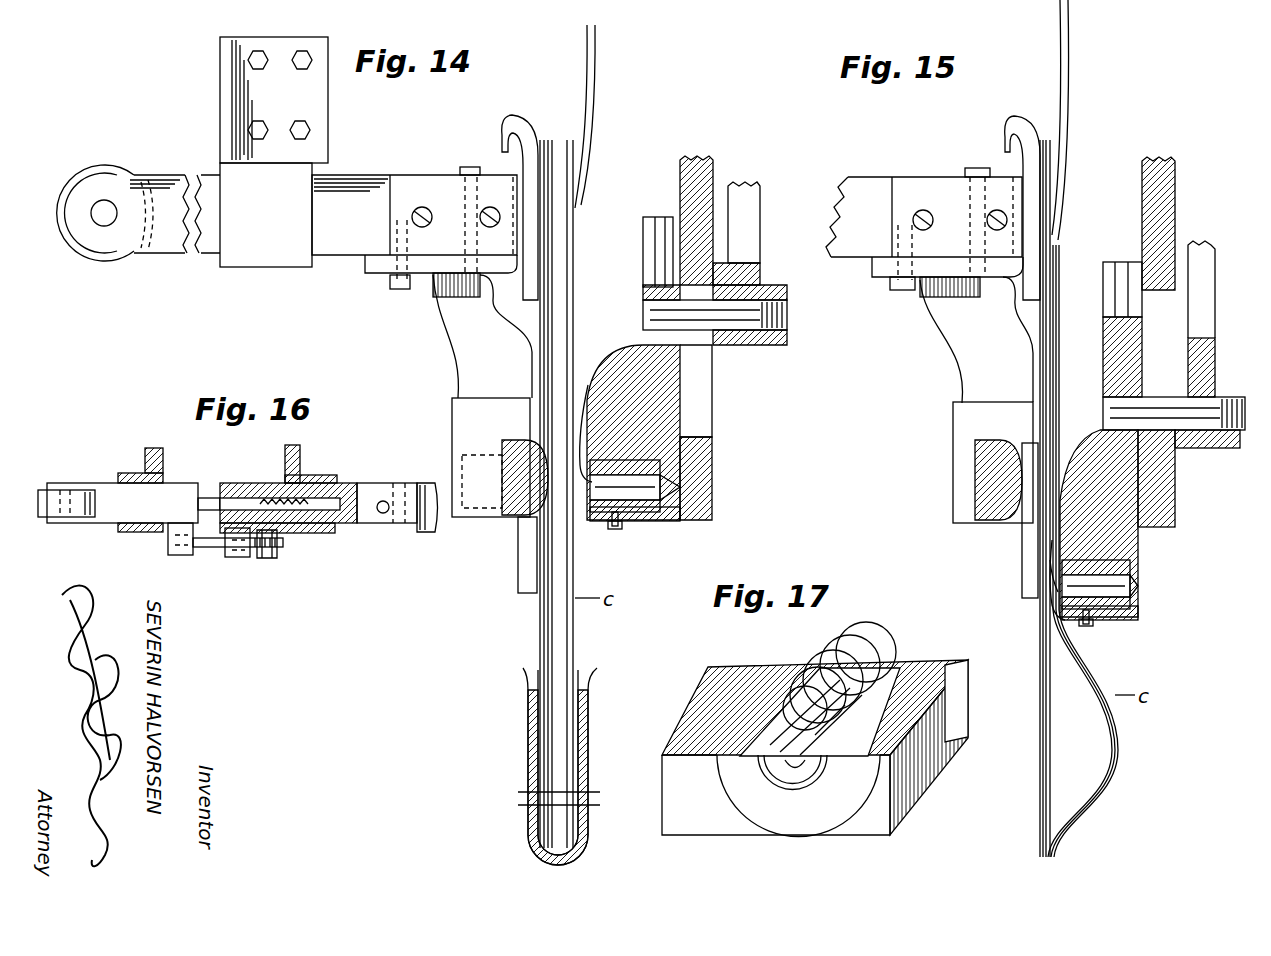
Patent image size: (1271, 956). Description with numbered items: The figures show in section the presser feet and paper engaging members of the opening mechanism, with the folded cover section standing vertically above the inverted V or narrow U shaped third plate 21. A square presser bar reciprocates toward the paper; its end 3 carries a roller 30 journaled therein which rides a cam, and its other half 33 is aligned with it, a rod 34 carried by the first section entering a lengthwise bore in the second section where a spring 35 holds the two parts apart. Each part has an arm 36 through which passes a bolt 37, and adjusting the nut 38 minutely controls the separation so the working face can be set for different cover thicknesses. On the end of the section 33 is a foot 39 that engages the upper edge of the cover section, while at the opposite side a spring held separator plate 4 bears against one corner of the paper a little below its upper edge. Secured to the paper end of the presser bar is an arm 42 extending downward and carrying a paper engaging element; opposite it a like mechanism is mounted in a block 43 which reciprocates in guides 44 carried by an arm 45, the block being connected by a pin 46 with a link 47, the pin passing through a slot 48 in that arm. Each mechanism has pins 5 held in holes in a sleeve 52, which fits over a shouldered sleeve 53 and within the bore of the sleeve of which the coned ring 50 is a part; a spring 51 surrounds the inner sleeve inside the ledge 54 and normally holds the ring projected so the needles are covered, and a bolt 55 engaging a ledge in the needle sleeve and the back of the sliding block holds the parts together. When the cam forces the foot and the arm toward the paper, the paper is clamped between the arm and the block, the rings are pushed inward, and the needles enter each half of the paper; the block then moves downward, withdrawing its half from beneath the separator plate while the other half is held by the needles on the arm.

In FIG. 14, the presser bar end 3 is at (165, 245).
In FIG. 16, the presser bar end 3 is at (115, 482).
In FIG. 14, the separator plate 4 is at (598, 162).
In FIG. 15, the separator plate 4 is at (1075, 180).
In FIG. 14, the pins 5 is at (587, 424).
In FIG. 15, the pins 5 is at (1055, 605).
In FIG. 17, the pins 5 is at (795, 790).
In FIG. 14, the third plate 21 is at (525, 740).
In FIG. 14, the roller 30 is at (97, 258).
In FIG. 16, the roller 30 is at (80, 490).
In FIG. 14, the presser bar half 33 is at (345, 245).
In FIG. 15, the presser bar half 33 is at (880, 182).
In FIG. 16, the presser bar half 33 is at (365, 490).
In FIG. 16, the rod 34 is at (212, 497).
In FIG. 16, the spring housing 35 is at (270, 497).
In FIG. 16, the arms 36 is at (172, 548).
In FIG. 16, the bolt 37 is at (205, 548).
In FIG. 16, the nut 38 is at (272, 558).
In FIG. 14, the foot 39 is at (522, 158).
In FIG. 15, the foot 39 is at (1035, 140).
In FIG. 16, the foot 39 is at (425, 482).
In FIG. 14, the arm 42 is at (455, 370).
In FIG. 15, the arm 42 is at (965, 380).
In FIG. 14, the block 43 is at (628, 395).
In FIG. 15, the block 43 is at (1128, 530).
In FIG. 14, the guides 44 is at (645, 262).
In FIG. 15, the guides 44 is at (1105, 290).
In FIG. 14, the arm 45 is at (680, 196).
In FIG. 15, the arm 45 is at (1142, 228).
In FIG. 14, the pin 46 is at (740, 345).
In FIG. 15, the pin 46 is at (1195, 450).
In FIG. 14, the link 47 is at (750, 233).
In FIG. 15, the link 47 is at (1210, 340).
In FIG. 14, the slot 48 is at (705, 403).
In FIG. 14, the ring 50 is at (520, 440).
In FIG. 15, the ring 50 is at (1010, 520).
In FIG. 17, the ring 50 is at (745, 805).
In FIG. 14, the spring 51 is at (660, 521).
In FIG. 15, the spring 51 is at (1125, 620).
In FIG. 17, the spring 51 is at (830, 648).
In FIG. 15, the sleeve 52 is at (1058, 592).
In FIG. 17, the sleeve 52 is at (830, 770).
In FIG. 17, the sleeve 53 is at (740, 705).
In FIG. 14, the ledge 54 is at (640, 523).
In FIG. 15, the ledge 54 is at (1138, 608).
In FIG. 17, the ledge 54 is at (775, 655).
In FIG. 14, the bolt 55 is at (685, 487).
In FIG. 15, the bolt 55 is at (1140, 588).
In FIG. 17, the bolt 55 is at (790, 770).